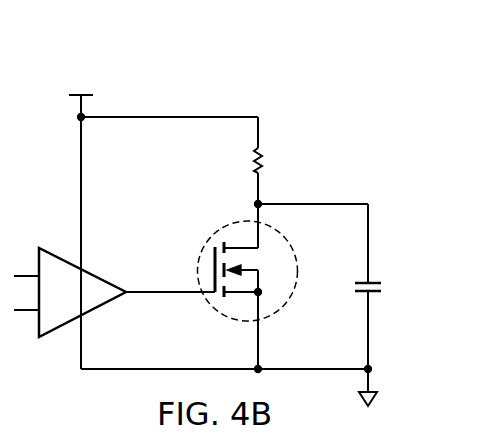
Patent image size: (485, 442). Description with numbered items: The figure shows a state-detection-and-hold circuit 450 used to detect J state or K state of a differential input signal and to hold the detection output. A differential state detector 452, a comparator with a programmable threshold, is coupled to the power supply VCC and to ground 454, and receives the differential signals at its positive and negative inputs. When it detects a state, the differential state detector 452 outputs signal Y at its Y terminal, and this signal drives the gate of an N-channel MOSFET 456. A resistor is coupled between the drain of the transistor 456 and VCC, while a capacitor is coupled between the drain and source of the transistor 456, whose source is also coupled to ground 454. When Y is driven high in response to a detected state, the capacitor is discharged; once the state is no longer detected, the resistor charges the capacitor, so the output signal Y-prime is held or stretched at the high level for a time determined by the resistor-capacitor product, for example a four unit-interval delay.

The state-detection-and-hold circuit 450 is at (336, 71).
The differential state detector 452 is at (104, 306).
The ground 454 is at (378, 400).
The N-channel MOSFET 456 is at (232, 221).